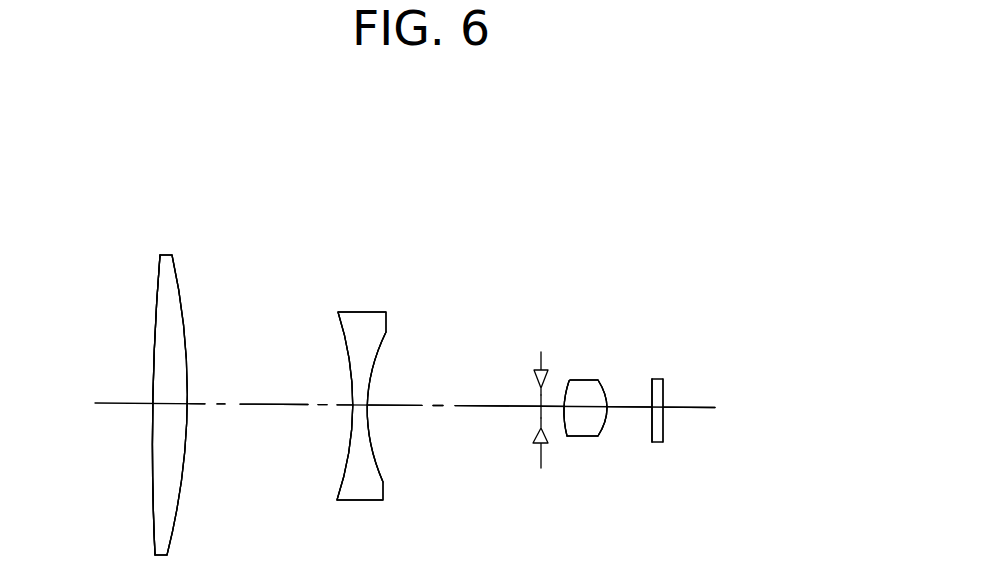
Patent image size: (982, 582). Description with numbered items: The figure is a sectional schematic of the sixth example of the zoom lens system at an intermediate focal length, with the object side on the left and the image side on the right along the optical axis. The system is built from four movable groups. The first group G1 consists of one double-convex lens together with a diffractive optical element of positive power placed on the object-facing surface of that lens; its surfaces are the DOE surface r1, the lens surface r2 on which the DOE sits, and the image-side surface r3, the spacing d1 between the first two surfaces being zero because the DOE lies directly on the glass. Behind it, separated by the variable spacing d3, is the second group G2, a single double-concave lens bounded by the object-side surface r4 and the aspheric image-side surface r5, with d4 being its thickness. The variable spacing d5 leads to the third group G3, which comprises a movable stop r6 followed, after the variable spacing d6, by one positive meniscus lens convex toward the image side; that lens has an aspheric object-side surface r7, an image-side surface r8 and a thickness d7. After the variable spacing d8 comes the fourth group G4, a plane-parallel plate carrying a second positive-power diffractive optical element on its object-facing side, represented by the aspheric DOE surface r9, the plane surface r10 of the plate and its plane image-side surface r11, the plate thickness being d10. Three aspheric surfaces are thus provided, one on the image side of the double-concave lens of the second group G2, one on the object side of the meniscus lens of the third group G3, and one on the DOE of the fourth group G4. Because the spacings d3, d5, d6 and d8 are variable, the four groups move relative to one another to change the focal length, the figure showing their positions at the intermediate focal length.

The first group G1 is at (195, 180).
The second group G2 is at (383, 183).
The third group G3 is at (607, 185).
The fourth group G4 is at (680, 185).
The radius of curvature of first lens surface r1 is at (157, 290).
The radius of curvature of second lens surface r2 is at (189, 374).
The radius of curvature of third lens surface r3 is at (180, 293).
The radius of curvature of fourth lens surface r4 is at (352, 350).
The radius of curvature of fifth lens surface r5 is at (380, 350).
The stop r6 is at (539, 395).
The radius of curvature of seventh lens surface r7 is at (566, 392).
The radius of curvature of eighth lens surface r8 is at (607, 390).
The radius of curvature of ninth lens surface r9 is at (652, 393).
The radius of curvature of tenth lens surface r10 is at (730, 341).
The radius of curvature of eleventh lens surface r11 is at (664, 393).
The spacing between first and second lens surfaces d1 is at (168, 405).
The spacing between third and fourth lens surfaces d3 is at (271, 425).
The spacing between fourth and fifth lens surfaces d4 is at (360, 410).
The spacing between fifth and sixth lens surfaces d5 is at (454, 428).
The spacing between sixth and seventh lens surfaces d6 is at (562, 410).
The spacing between seventh and eighth lens surfaces d7 is at (585, 410).
The spacing between eighth and ninth lens surfaces d8 is at (628, 410).
The spacing between tenth and eleventh lens surfaces d10 is at (657, 412).